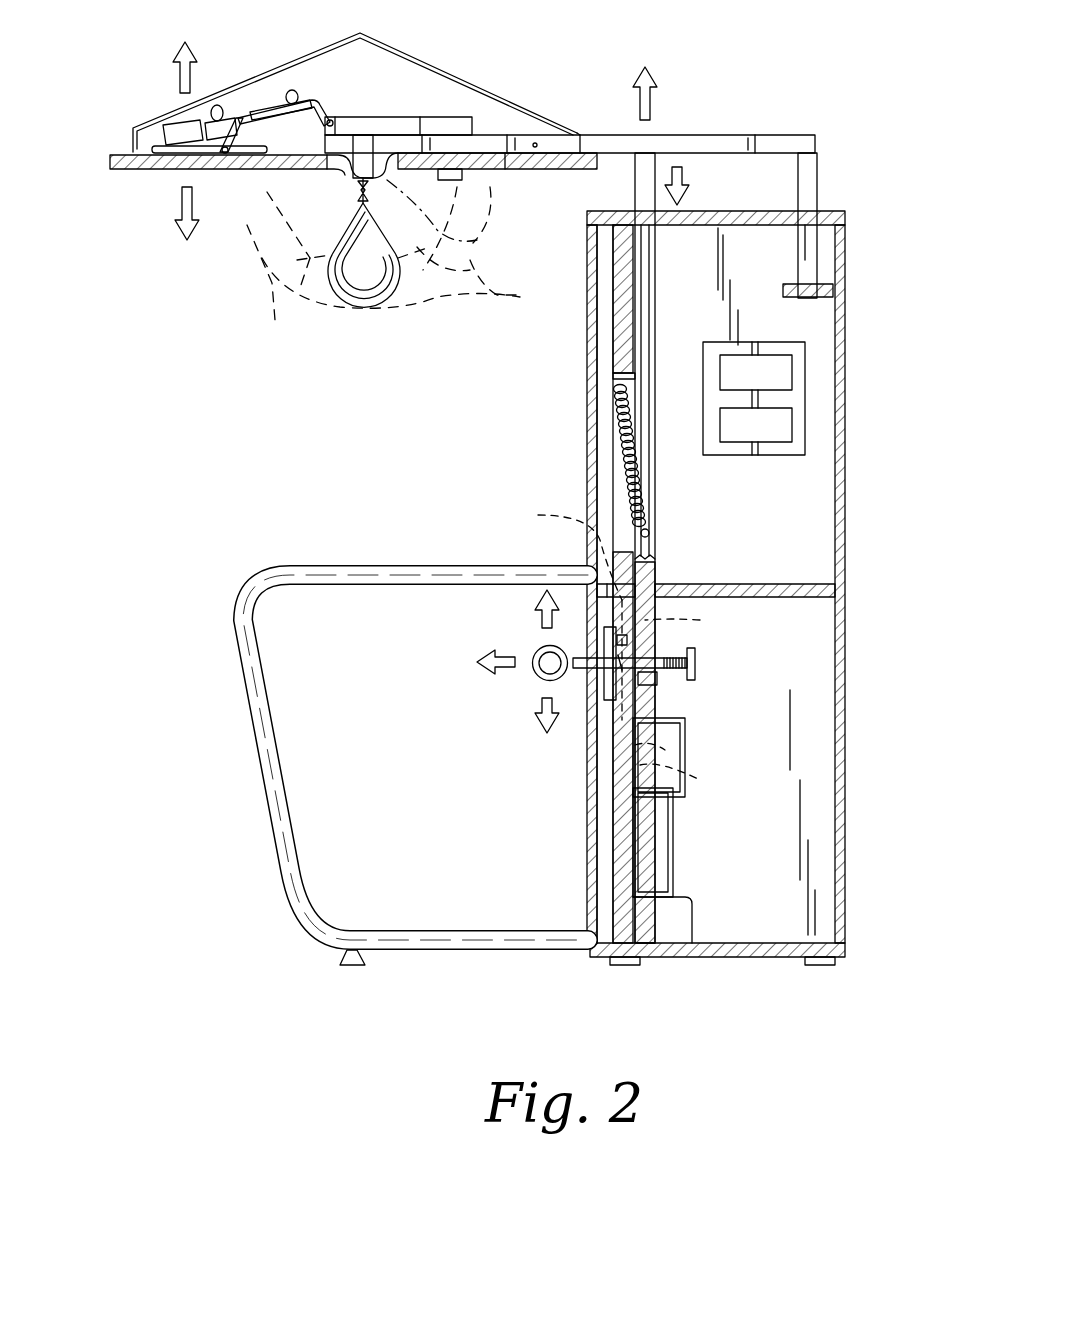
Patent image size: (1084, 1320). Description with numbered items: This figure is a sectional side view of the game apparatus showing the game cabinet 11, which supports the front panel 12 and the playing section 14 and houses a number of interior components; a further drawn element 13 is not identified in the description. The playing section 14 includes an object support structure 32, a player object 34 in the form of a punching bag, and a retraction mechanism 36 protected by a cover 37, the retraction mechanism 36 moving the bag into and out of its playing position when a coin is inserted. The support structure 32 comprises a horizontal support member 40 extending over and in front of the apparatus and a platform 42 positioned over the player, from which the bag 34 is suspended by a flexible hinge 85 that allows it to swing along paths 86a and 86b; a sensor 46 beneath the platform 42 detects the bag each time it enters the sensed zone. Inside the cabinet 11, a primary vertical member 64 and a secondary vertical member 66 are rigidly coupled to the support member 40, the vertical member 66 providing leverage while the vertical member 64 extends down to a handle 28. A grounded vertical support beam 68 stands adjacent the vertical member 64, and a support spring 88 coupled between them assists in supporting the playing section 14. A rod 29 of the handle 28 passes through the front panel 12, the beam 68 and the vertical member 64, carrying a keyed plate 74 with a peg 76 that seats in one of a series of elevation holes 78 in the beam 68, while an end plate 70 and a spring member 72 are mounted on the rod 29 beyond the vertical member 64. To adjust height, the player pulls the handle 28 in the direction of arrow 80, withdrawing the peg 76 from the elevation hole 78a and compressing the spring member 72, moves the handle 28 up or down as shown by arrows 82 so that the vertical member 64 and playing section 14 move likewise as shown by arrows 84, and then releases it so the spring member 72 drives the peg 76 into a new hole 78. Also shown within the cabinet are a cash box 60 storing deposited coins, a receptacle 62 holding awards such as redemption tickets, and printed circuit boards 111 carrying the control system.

The game cabinet 11 is at (845, 325).
The front panel 12 is at (588, 793).
The tubular support frame 13 is at (272, 793).
The playing section 14 is at (165, 272).
The handle 28 is at (545, 680).
The rod 29 is at (625, 668).
The object support structure 32 is at (582, 130).
The player object 34 is at (365, 310).
The retraction mechanism 36 is at (358, 93).
The cover 37 is at (267, 75).
The support member 40 is at (728, 140).
The platform 42 is at (112, 163).
The sensor 46 is at (445, 160).
The cash box 60 is at (660, 735).
The receptacle 62 is at (655, 845).
The primary vertical member 64 is at (635, 185).
The secondary vertical member 66 is at (808, 175).
The vertical support beam 68 is at (620, 305).
The end plate 70 is at (700, 670).
The spring member 72 is at (692, 652).
The keyed plate 74 is at (604, 630).
The peg 76 is at (640, 628).
The elevation holes 78 is at (730, 777).
The elevation hole 78a is at (696, 617).
The arrow 80 is at (480, 668).
The arrows 82 is at (545, 600).
The arrows 84 is at (178, 50).
The flexible hinge 85 is at (357, 191).
The path 86a is at (485, 297).
The path 86b is at (379, 272).
The support spring 88 is at (495, 185).
The printed circuit boards 111 is at (770, 440).